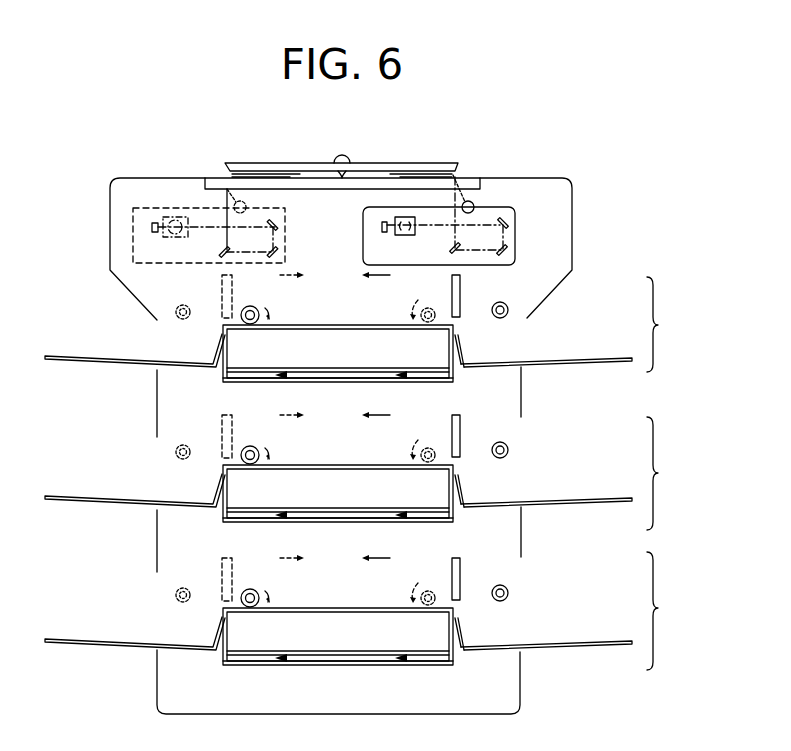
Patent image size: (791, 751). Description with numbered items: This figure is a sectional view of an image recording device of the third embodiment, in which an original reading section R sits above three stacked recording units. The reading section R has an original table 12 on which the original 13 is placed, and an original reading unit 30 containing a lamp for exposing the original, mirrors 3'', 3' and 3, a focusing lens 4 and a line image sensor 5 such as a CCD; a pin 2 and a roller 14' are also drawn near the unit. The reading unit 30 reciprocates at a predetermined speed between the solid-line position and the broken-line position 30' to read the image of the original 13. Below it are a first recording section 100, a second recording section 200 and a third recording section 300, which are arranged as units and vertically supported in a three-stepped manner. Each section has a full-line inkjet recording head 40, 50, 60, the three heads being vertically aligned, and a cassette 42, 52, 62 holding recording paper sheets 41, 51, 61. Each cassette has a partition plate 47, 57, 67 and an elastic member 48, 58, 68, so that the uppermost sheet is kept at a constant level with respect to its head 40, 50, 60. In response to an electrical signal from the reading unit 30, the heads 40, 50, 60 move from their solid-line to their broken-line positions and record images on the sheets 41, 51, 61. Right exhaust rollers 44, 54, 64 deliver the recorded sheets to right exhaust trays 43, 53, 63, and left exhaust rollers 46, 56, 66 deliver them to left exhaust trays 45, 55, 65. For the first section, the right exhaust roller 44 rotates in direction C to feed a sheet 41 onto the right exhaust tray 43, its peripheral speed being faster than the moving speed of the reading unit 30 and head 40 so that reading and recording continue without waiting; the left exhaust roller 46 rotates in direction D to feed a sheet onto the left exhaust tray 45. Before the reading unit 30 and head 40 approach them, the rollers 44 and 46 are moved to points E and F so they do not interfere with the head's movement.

The pin 2 is at (473, 203).
The mirror 3 is at (527, 221).
The mirror 3' is at (528, 251).
The mirror 3'' is at (433, 248).
The focusing lens 4 is at (405, 217).
The line image sensor 5 is at (380, 226).
The original table 12 is at (216, 178).
The original 13 is at (258, 163).
The roller 14' is at (425, 291).
The original reading unit 30 is at (446, 191).
The optical reading unit (moved position) 30' is at (202, 203).
The recording head 40 is at (460, 294).
The recording paper sheet 41 is at (335, 338).
The cassette 42 is at (455, 376).
The right exhaust tray 43 is at (607, 357).
The right exhaust roller 44 is at (476, 347).
The left exhaust tray 45 is at (80, 355).
The left exhaust roller 46 is at (250, 306).
The partition plate 47 is at (360, 373).
The elastic member 48 is at (283, 375).
The recording head 50 is at (460, 424).
The recording paper sheet 51 is at (317, 480).
The cassette 52 is at (455, 516).
The right exhaust tray 53 is at (592, 497).
The right exhaust roller 54 is at (508, 447).
The left exhaust tray 55 is at (88, 495).
The left exhaust roller 56 is at (240, 460).
The partition plate 57 is at (323, 508).
The elastic member 58 is at (280, 515).
The recording head 60 is at (460, 565).
The recording paper sheet 61 is at (340, 620).
The cassette 62 is at (455, 663).
The right exhaust tray 63 is at (588, 640).
The right exhaust roller 64 is at (507, 593).
The left exhaust tray 65 is at (93, 639).
The left exhaust roller 66 is at (240, 605).
The partition plate 67 is at (323, 657).
The elastic member 68 is at (282, 658).
The first recording section 100 is at (677, 324).
The second recording section 200 is at (677, 473).
The third recording section 300 is at (677, 611).
The original reading section R is at (647, 148).
The arrow C is at (417, 308).
The arrow D is at (268, 311).
The point E is at (508, 315).
The point F is at (177, 318).